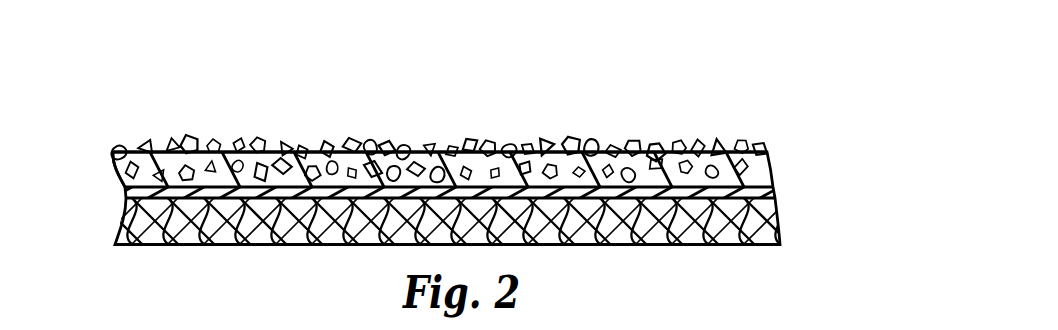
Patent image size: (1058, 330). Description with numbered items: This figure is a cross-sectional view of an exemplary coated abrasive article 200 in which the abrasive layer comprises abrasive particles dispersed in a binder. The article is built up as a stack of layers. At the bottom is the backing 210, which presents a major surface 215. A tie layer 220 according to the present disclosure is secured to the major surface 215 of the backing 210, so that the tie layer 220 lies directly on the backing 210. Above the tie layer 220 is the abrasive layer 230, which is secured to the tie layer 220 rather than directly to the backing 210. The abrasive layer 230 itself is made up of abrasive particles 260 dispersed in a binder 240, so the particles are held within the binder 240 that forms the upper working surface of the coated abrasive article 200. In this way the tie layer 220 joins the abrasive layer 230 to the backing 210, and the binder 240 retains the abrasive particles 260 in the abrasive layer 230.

The coated abrasive article 200 is at (692, 102).
The backing 210 is at (778, 228).
The major surface 215 is at (781, 206).
The tie layer 220 is at (778, 191).
The abrasive layer 230 is at (107, 165).
The binder 240 is at (772, 176).
The abrasive particles 260 is at (572, 143).